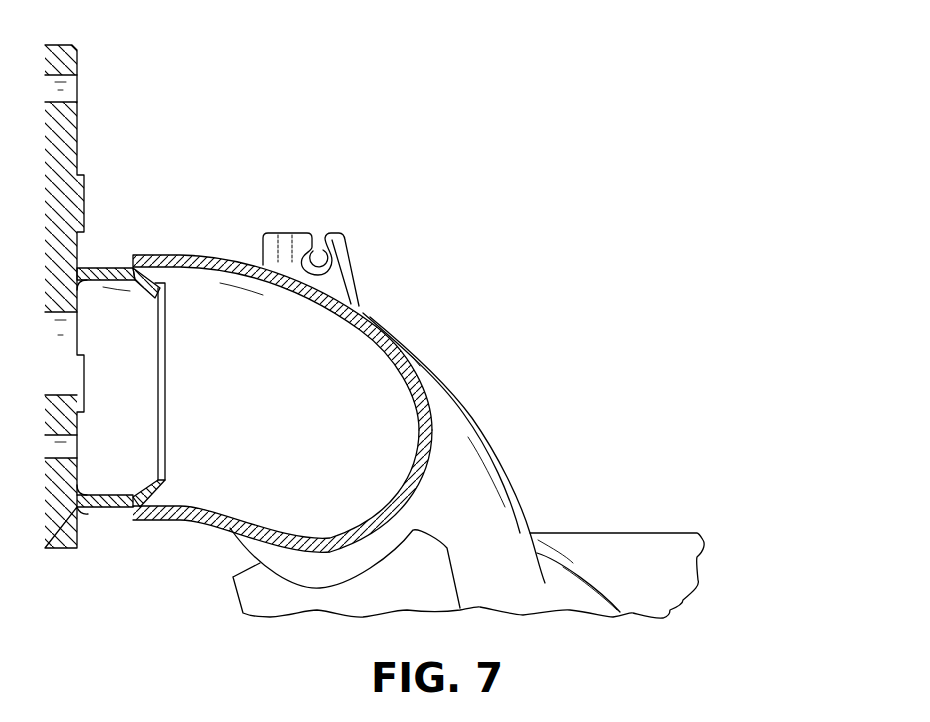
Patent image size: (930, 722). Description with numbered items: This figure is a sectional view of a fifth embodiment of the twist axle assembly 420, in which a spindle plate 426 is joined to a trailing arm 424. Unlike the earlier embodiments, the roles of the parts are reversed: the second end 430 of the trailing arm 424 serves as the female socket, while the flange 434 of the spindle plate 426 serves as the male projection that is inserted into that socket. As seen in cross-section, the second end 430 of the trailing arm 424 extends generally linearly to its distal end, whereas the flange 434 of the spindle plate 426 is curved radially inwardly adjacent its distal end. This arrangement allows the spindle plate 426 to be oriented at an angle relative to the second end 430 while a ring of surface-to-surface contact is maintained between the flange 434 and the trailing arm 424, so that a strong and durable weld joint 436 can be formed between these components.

The twist axle assembly 420 is at (407, 261).
The trailing arm 424 is at (467, 412).
The spindle plate 426 is at (78, 126).
The second end 430 is at (163, 522).
The flange 434 is at (90, 267).
The flange 436 is at (127, 515).